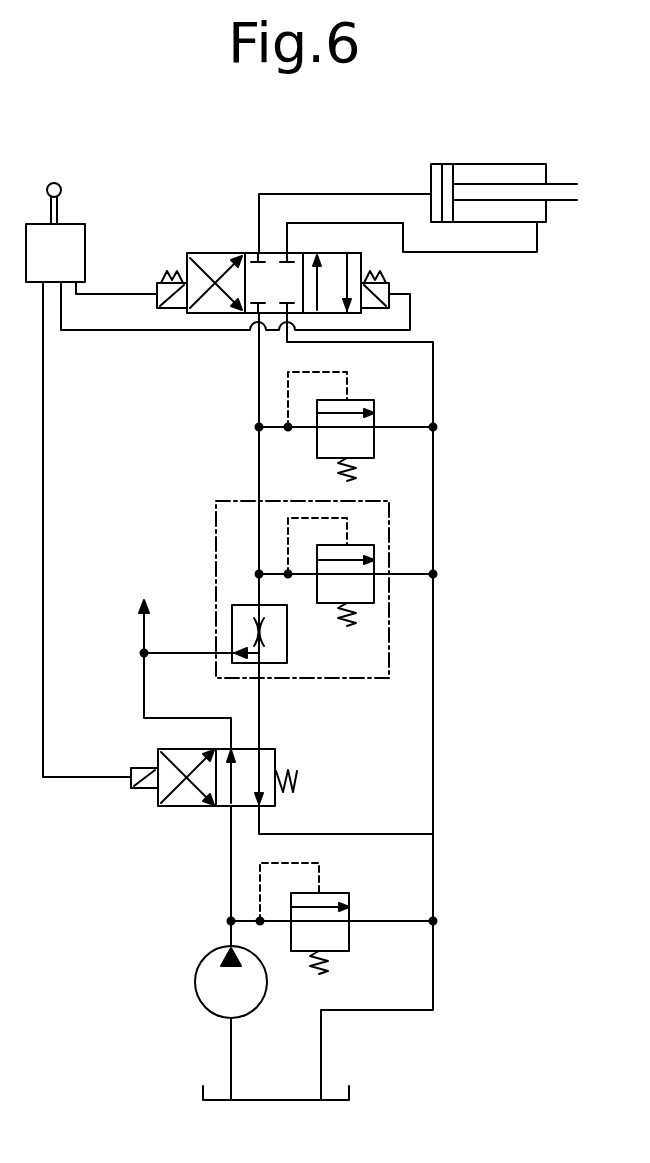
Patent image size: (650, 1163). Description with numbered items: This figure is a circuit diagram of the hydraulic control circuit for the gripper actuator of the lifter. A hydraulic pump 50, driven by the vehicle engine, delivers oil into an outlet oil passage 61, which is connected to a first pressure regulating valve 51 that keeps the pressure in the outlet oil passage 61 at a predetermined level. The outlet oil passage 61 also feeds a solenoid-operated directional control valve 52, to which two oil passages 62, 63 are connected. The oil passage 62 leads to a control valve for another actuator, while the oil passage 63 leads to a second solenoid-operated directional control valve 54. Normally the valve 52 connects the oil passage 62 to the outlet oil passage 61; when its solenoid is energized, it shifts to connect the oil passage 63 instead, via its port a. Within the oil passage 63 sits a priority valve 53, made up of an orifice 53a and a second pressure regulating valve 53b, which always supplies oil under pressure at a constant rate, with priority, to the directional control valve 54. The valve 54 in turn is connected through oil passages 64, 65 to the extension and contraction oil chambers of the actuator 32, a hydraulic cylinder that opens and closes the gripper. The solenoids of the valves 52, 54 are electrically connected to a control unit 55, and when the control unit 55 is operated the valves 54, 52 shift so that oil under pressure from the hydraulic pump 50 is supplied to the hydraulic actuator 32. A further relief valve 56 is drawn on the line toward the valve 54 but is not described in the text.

The actuator 32 is at (490, 163).
The hydraulic pump 50 is at (196, 985).
The first pressure regulating valve 51 is at (336, 893).
The solenoid-operated directional control valve 52 is at (167, 807).
The priority valve 53 is at (389, 568).
The orifice 53a is at (287, 642).
The second pressure regulating valve 53b is at (374, 591).
The solenoid-operated directional control valve 54 is at (211, 252).
The control unit 55 is at (74, 223).
The relief valve 56 is at (358, 400).
The outlet oil passage 61 is at (231, 880).
The oil passage 62 is at (143, 682).
The oil passage 63 is at (258, 385).
The oil passage 64 is at (341, 194).
The oil passage 65 is at (446, 253).